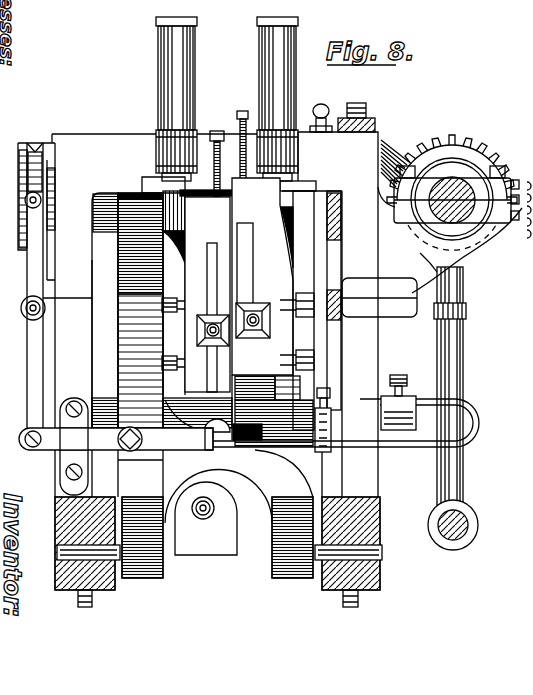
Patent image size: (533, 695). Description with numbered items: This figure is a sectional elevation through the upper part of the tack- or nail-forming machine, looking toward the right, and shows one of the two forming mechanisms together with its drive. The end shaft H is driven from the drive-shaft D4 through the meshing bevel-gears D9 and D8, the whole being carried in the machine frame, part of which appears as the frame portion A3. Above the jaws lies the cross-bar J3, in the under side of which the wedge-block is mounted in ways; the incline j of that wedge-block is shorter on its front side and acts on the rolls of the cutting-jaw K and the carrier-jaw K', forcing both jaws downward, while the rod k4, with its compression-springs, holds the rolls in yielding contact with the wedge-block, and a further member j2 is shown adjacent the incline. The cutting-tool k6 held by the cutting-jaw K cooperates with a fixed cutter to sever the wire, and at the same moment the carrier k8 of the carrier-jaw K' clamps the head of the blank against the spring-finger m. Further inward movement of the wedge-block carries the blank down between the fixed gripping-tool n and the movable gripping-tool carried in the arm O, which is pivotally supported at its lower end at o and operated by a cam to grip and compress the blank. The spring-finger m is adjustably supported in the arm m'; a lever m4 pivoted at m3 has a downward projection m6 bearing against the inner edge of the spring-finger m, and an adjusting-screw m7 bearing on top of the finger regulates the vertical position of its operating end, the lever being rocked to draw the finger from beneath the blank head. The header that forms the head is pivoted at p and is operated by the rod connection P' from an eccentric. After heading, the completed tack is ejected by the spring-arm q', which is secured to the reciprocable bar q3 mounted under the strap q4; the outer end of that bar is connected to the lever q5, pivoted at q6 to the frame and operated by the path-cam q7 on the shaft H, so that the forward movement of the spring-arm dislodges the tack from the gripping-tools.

The cross-bar J3 is at (265, 99).
The path-cam q7 is at (24, 144).
The lever q5 is at (32, 291).
The pivot q6 is at (22, 306).
The end shaft H is at (105, 310).
The arm O is at (140, 385).
The rod k4 is at (160, 186).
The rod j2 is at (204, 182).
The incline j is at (228, 182).
The carrier-jaw K' is at (207, 294).
The cutting-jaw K is at (262, 309).
The carrier k8 is at (212, 350).
The cutting-tool k6 is at (246, 366).
The fixed gripping-tool n is at (220, 425).
The pivot m3 is at (320, 306).
The lever m4 is at (326, 349).
The adjusting-screw m7 is at (331, 396).
The downward projection m6 is at (332, 436).
The frame A3 is at (57, 392).
The pivot o is at (57, 552).
The pivot p is at (203, 520).
The strap q4 is at (74, 446).
The spring-arm q' is at (116, 440).
The reciprocable bar q3 is at (121, 440).
The spring-finger m is at (342, 434).
The arm m' is at (405, 409).
The rod connection P' is at (467, 379).
The bevel-gear D9 is at (390, 150).
The drive-shaft D4 is at (460, 215).
The bevel-gear D8 is at (493, 165).